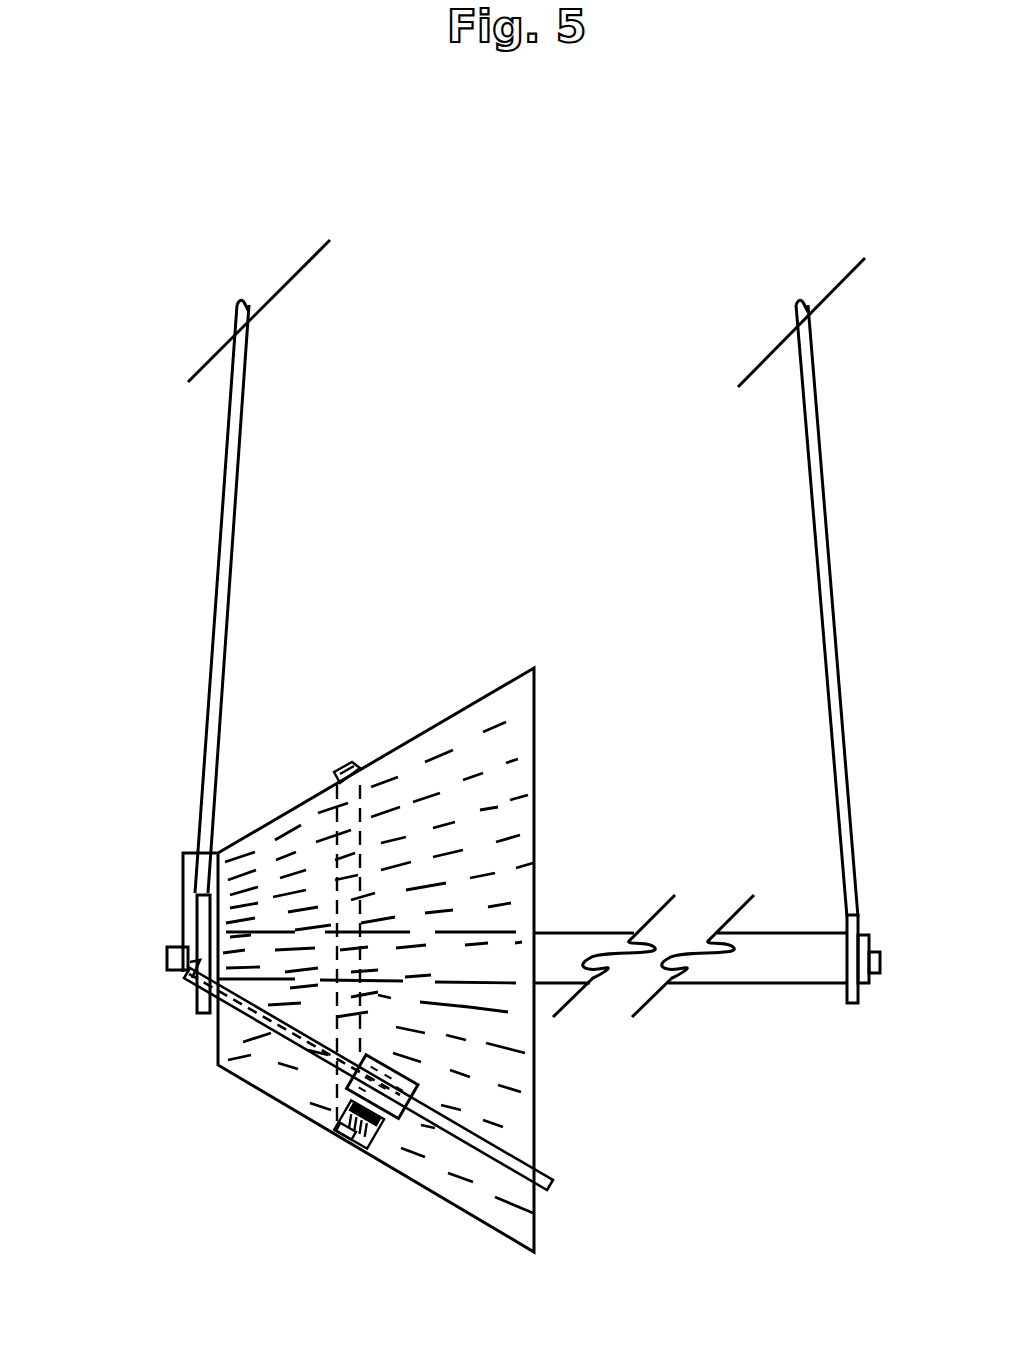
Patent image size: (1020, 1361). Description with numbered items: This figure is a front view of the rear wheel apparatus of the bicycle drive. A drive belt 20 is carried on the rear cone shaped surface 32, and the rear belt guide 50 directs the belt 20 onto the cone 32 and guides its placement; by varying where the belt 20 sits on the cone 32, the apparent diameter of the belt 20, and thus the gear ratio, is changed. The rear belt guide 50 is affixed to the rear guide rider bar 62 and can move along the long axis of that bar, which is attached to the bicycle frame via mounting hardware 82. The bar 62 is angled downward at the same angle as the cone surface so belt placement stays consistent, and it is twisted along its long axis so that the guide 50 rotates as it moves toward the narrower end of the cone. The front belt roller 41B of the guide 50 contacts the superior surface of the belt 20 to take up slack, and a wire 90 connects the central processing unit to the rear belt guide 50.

The drive belt 20 is at (352, 762).
The rear cone shaped surface 32 is at (267, 852).
The mounting hardware 82 is at (188, 910).
The wire 90 is at (188, 976).
The rear belt guide 50 is at (333, 1087).
The front belt roller 41B is at (336, 1135).
The rear guide rider bar 62 is at (459, 1135).